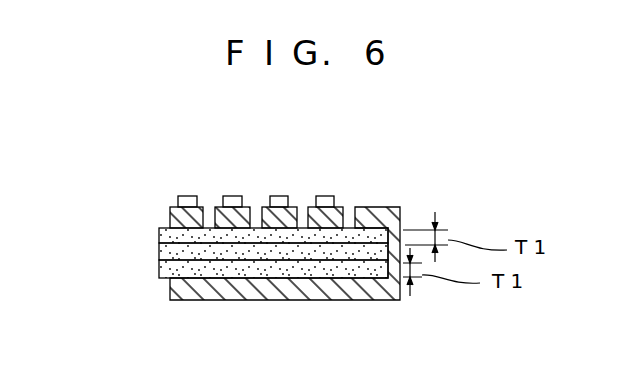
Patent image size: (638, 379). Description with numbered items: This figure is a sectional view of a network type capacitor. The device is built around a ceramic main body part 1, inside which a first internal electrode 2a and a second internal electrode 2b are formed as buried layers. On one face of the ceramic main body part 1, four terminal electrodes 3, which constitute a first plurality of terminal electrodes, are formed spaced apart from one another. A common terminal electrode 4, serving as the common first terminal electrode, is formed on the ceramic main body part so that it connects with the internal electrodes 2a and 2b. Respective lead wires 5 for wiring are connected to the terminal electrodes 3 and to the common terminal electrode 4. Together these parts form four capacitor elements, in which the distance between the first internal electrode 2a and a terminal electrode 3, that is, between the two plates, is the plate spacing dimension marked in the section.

The ceramic main body part 1 is at (165, 233).
The first internal electrode 2a is at (197, 243).
The second internal electrode 2b is at (200, 260).
The terminal electrodes 3 is at (312, 200).
The common terminal electrode 4 is at (373, 207).
The lead wires 5 is at (189, 196).